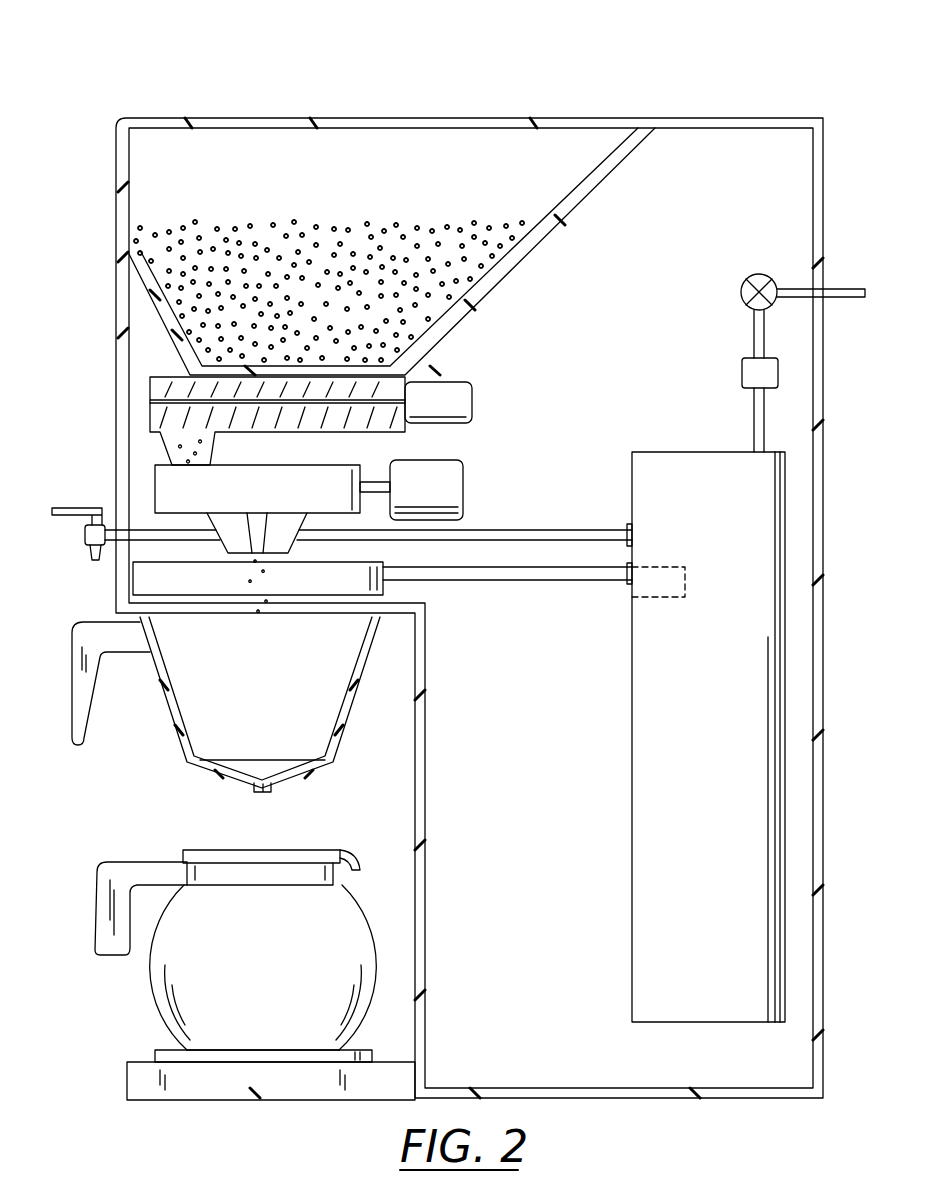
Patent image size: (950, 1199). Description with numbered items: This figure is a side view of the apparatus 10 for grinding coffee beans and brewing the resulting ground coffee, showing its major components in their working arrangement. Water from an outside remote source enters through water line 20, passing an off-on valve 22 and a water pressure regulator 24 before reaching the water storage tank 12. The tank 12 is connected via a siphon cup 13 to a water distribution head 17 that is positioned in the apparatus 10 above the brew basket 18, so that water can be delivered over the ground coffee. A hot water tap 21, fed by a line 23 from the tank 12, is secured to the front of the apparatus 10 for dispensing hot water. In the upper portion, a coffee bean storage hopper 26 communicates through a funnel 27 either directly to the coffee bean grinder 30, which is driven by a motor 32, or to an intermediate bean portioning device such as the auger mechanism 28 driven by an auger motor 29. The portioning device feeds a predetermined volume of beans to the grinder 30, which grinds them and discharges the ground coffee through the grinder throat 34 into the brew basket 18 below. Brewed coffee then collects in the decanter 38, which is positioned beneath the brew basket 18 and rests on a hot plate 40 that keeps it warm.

The apparatus 10 is at (112, 70).
The water storage tank 12 is at (632, 703).
The siphon cup 13 is at (665, 597).
The water distribution head 17 is at (148, 585).
The brew basket 18 is at (185, 755).
The water line 20 is at (855, 290).
The hot water tap 21 is at (85, 537).
The off-on valve 22 is at (745, 285).
The line 23 is at (582, 496).
The water pressure regulator 24 is at (745, 365).
The coffee bean storage hopper 26 is at (117, 175).
The funnel 27 is at (165, 342).
The auger mechanism 28 is at (150, 405).
The auger motor 29 is at (470, 385).
The coffee bean grinder 30 is at (160, 478).
The motor 32 is at (455, 480).
The grinder throat 34 is at (235, 545).
The decanter 38 is at (150, 985).
The hot plate 40 is at (155, 1057).